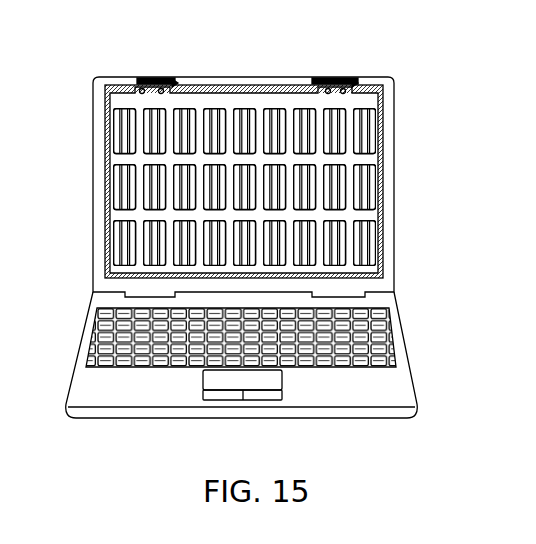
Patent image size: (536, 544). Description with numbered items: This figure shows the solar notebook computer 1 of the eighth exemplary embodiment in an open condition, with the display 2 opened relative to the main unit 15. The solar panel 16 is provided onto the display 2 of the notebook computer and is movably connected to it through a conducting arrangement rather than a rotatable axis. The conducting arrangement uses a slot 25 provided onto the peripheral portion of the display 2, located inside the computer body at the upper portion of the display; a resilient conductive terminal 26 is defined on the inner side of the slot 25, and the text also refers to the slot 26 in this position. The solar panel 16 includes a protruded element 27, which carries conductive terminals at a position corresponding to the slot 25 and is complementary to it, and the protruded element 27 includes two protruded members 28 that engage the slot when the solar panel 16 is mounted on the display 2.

The solar notebook computer 1 is at (245, 224).
The display 2 is at (245, 163).
The main unit 15 is at (276, 355).
The solar panel 16 is at (296, 195).
The slot 25 is at (209, 57).
The resilient conductive terminal 26 is at (280, 58).
The protruded element 27 is at (243, 123).
The protruded members 28 is at (245, 152).